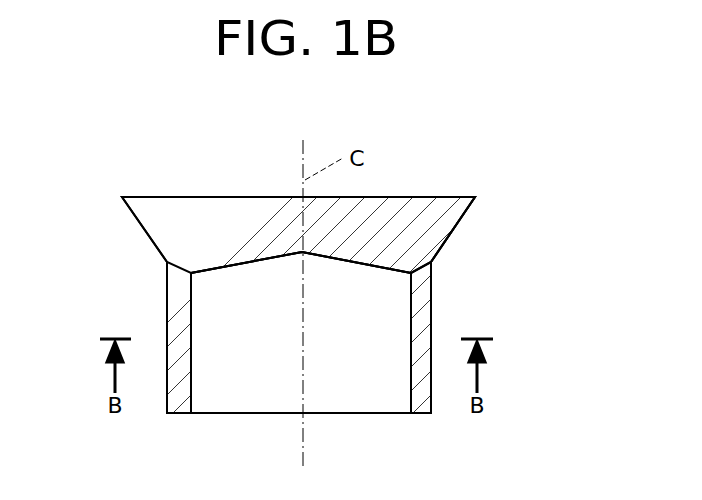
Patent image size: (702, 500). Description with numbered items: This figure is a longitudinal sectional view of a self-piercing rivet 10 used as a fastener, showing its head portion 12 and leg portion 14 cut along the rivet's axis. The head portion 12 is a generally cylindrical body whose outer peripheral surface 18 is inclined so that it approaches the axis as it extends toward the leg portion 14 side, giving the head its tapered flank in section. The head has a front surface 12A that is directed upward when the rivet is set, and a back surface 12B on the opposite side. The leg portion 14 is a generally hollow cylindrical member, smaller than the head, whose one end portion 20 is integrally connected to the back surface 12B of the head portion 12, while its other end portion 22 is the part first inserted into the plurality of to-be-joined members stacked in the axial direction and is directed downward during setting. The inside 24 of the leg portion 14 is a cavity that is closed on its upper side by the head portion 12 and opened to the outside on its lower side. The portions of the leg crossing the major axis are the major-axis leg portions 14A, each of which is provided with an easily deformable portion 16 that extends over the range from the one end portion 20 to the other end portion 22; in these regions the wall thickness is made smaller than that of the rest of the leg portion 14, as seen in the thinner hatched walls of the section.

The self-piercing rivet 10 is at (414, 129).
The head portion 12 is at (429, 196).
The front surface of the head portion 12A is at (187, 197).
The back surface of the head portion 12B is at (385, 268).
The leg portion 14 is at (164, 286).
The major-axis leg portion 14A is at (164, 325).
The easily deformable portion 16 is at (180, 380).
The outer peripheral surface of the head portion 18 is at (452, 237).
The one end portion of the leg portion 20 is at (433, 282).
The other end portion of the leg portion 22 is at (432, 403).
The inside of the leg portion 24 is at (277, 357).